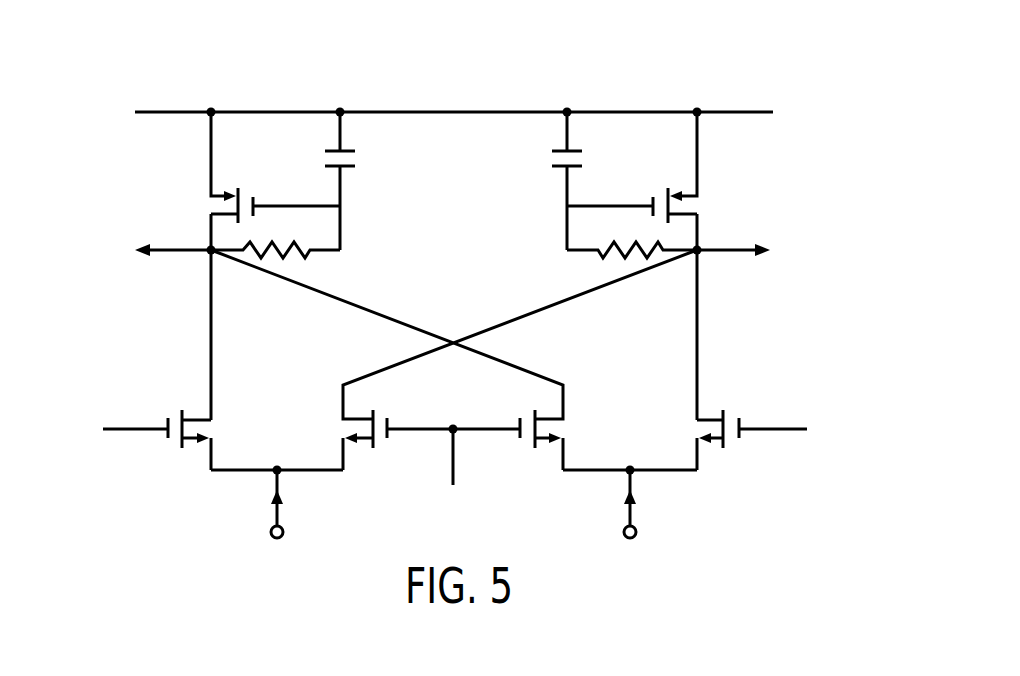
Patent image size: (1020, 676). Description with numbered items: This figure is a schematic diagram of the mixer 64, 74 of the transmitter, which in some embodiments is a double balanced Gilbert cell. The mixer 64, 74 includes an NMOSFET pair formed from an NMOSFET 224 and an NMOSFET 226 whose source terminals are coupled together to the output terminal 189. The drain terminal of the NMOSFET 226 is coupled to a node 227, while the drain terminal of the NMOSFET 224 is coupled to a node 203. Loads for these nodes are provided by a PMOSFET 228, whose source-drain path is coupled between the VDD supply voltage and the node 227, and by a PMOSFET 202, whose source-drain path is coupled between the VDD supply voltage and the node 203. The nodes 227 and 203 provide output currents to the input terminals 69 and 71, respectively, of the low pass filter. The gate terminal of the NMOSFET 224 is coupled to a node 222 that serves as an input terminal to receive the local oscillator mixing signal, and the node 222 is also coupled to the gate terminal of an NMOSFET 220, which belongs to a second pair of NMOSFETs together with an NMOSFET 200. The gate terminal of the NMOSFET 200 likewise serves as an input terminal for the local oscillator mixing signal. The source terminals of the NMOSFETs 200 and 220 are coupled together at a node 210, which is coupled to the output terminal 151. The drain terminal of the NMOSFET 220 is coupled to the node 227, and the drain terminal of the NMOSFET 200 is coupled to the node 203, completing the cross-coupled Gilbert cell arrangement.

The mixer 64 is at (453, 285).
The mixer 74 is at (453, 309).
The PMOSFET 202 is at (232, 212).
The PMOSFET 228 is at (680, 212).
The input terminal of the LPF 71 is at (178, 255).
The input terminal of the LPF 69 is at (733, 255).
The node 203 is at (208, 252).
The node 227 is at (703, 254).
The NMOSFET 200 is at (201, 418).
The NMOSFET 226 is at (710, 418).
The NMOSFET 220 is at (366, 445).
The NMOSFET 224 is at (540, 445).
The node 222 is at (455, 426).
The node 210 is at (279, 468).
The output terminal 151 is at (273, 508).
The output terminal 189 is at (633, 508).